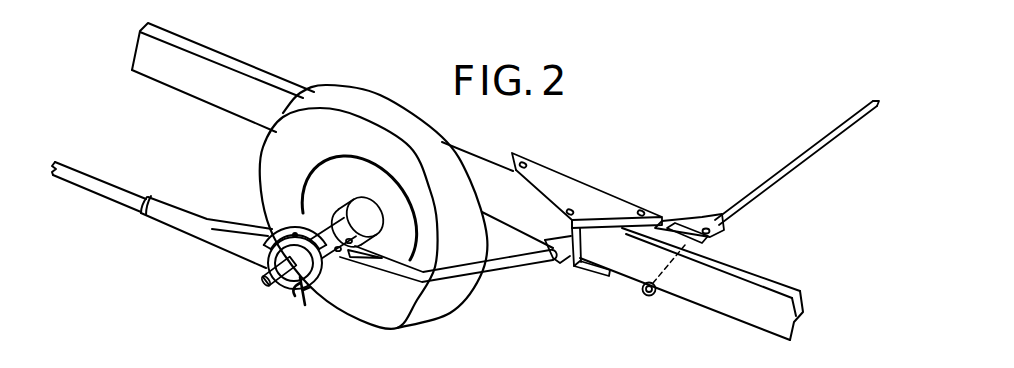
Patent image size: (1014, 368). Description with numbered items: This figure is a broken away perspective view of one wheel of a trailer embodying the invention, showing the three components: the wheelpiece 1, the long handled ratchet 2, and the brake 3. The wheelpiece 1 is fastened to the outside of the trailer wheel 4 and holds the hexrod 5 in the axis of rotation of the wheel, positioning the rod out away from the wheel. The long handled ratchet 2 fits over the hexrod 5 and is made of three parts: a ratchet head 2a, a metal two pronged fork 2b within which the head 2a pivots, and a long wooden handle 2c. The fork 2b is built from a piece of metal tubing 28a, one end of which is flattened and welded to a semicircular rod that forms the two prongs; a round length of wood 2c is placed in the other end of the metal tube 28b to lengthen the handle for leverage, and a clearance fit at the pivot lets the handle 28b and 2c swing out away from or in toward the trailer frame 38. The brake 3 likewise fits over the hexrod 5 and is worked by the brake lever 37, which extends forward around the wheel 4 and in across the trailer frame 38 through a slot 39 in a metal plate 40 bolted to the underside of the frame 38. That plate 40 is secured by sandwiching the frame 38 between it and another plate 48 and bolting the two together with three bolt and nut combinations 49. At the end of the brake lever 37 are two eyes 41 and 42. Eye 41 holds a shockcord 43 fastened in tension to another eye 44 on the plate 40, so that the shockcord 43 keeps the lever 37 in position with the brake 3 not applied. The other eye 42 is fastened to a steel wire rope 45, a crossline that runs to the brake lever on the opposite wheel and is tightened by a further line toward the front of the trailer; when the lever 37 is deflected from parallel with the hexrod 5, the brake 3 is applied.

The wheelpiece 1 is at (305, 188).
The long handled ratchet 2 is at (181, 200).
The ratchet head 2a is at (295, 290).
The two pronged fork 2b is at (294, 306).
The long wooden handle 2c is at (103, 186).
The brake 3 is at (336, 263).
The trailer wheel 4 is at (284, 147).
The hexrod 5 is at (268, 285).
The metal tubing 28a is at (262, 257).
The metal tube 28b is at (152, 217).
The brake lever 37 is at (388, 222).
The trailer frame 38 is at (181, 76).
The slot 39 is at (558, 270).
The metal plate 40 is at (607, 274).
The eye 41 is at (713, 246).
The eye 42 is at (728, 223).
The shockcord 43 is at (677, 263).
The eye 44 is at (650, 296).
The steel wire rope 45 is at (792, 157).
The plate 48 is at (587, 205).
The bolt and nut combinations 49 is at (585, 242).